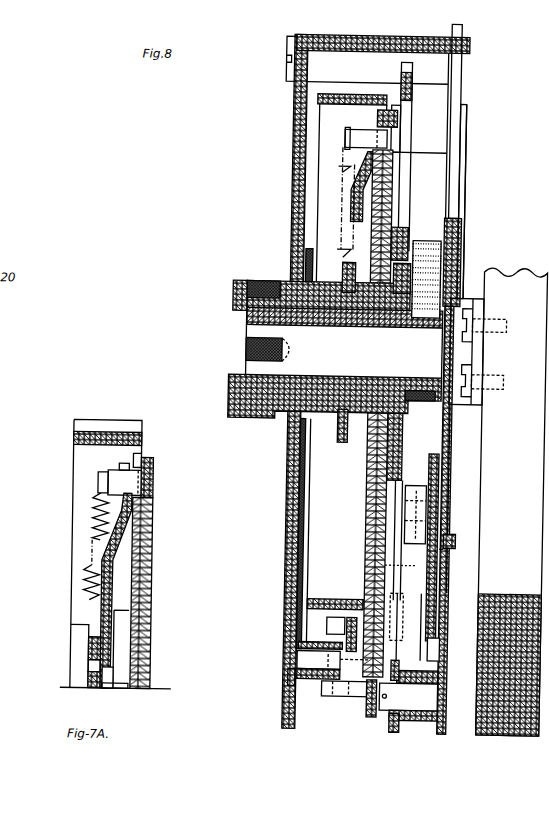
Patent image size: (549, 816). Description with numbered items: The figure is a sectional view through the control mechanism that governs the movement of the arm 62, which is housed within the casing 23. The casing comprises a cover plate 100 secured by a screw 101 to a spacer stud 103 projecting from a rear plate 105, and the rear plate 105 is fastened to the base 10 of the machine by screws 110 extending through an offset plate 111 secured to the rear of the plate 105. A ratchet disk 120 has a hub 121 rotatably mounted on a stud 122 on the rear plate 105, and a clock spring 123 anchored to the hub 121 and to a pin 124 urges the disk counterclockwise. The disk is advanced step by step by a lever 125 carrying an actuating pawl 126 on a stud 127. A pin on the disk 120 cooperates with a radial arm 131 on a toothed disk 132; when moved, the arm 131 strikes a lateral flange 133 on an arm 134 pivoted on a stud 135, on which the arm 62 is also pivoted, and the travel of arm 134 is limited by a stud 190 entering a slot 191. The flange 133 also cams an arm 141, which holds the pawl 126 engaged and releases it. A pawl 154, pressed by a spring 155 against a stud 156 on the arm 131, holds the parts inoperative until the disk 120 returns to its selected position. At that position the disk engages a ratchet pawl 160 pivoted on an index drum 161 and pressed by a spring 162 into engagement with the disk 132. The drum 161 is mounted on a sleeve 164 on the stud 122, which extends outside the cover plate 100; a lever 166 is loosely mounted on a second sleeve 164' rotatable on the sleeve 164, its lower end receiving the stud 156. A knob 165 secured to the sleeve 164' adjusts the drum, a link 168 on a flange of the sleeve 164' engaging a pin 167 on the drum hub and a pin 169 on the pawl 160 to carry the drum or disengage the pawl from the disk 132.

In FIG. 8, the base 10 is at (512, 502).
In FIG. 8, the casing 23 is at (268, 637).
In FIG. 8, the arm 62 is at (443, 466).
In FIG. 8, the cover plate 100 is at (291, 146).
In FIG. 8, the screw 101 is at (282, 47).
In FIG. 8, the spacer stud 103 is at (346, 65).
In FIG. 8, the rear plate 105 is at (460, 192).
In FIG. 8, the screws 110 is at (468, 312).
In FIG. 8, the offset plate 111 is at (474, 342).
In FIG. 8, the ratchet disk 120 is at (408, 80).
In FIG. 8, the hub 121 is at (412, 322).
In FIG. 8, the stud 122 is at (343, 362).
In FIG. 8, the clock spring 123 is at (425, 242).
In FIG. 8, the pin 124 is at (448, 435).
In FIG. 8, the lever 125 is at (460, 255).
In FIG. 8, the actuating pawl 126 is at (397, 728).
In FIG. 8, the stud 127 is at (408, 695).
In FIG. 8, the radial arm 131 is at (409, 625).
In FIG. 7A, the toothed disk 132 is at (148, 625).
In FIG. 8, the toothed disk 132 is at (392, 198).
In FIG. 8, the lateral flange 133 is at (420, 658).
In FIG. 8, the arm 134 is at (460, 540).
In FIG. 8, the stud 135 is at (432, 508).
In FIG. 8, the arm 141 is at (374, 708).
In FIG. 8, the pawl 154 is at (362, 599).
In FIG. 8, the spring 155 is at (334, 627).
In FIG. 8, the stud 156 is at (332, 686).
In FIG. 7A, the ratchet pawl 160 is at (148, 458).
In FIG. 8, the ratchet pawl 160 is at (395, 122).
In FIG. 7A, the index drum 161 is at (100, 420).
In FIG. 8, the index drum 161 is at (360, 112).
In FIG. 7A, the spring 162 is at (93, 510).
In FIG. 8, the spring 162 is at (340, 244).
In FIG. 7A, the sleeve 164 is at (69, 648).
In FIG. 8, the sleeve 164 is at (336, 350).
In FIG. 8, the sleeve 164' is at (337, 277).
In FIG. 8, the knob 165 is at (240, 284).
In FIG. 8, the lever 166 is at (306, 265).
In FIG. 7A, the pin 167 is at (112, 688).
In FIG. 7A, the link 168 is at (113, 558).
In FIG. 8, the link 168 is at (349, 205).
In FIG. 7A, the pin 169 is at (140, 485).
In FIG. 8, the pin 169 is at (356, 140).
In FIG. 8, the stud 190 is at (430, 572).
In FIG. 8, the slot 191 is at (455, 558).